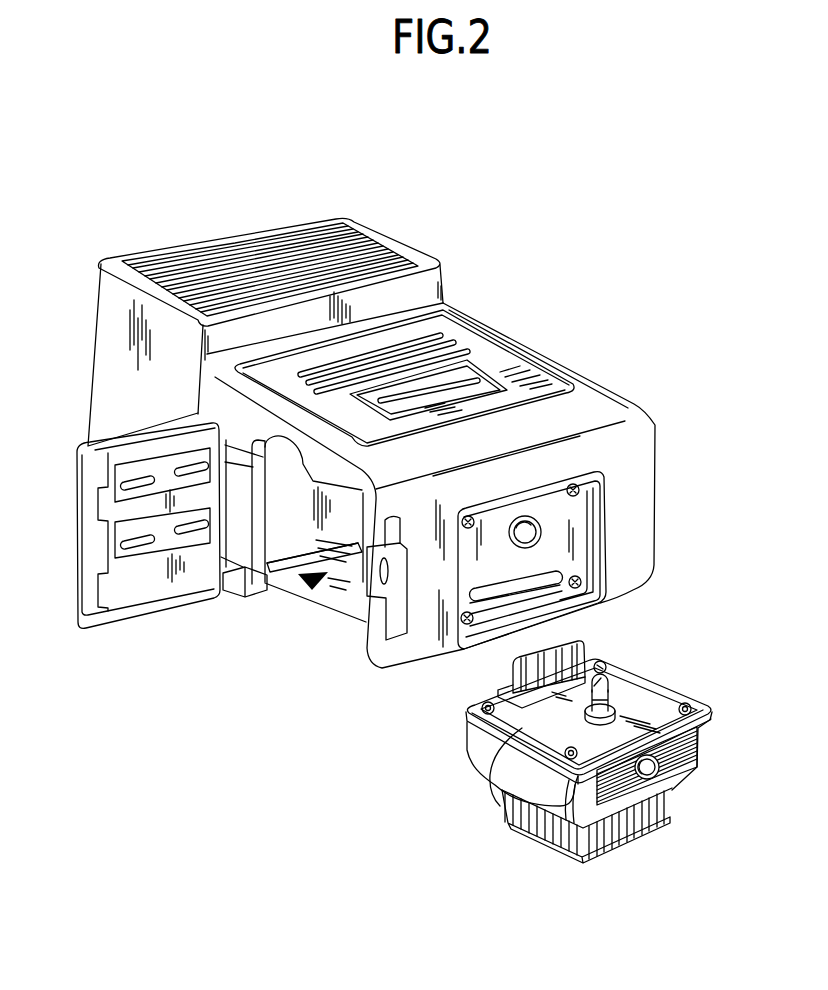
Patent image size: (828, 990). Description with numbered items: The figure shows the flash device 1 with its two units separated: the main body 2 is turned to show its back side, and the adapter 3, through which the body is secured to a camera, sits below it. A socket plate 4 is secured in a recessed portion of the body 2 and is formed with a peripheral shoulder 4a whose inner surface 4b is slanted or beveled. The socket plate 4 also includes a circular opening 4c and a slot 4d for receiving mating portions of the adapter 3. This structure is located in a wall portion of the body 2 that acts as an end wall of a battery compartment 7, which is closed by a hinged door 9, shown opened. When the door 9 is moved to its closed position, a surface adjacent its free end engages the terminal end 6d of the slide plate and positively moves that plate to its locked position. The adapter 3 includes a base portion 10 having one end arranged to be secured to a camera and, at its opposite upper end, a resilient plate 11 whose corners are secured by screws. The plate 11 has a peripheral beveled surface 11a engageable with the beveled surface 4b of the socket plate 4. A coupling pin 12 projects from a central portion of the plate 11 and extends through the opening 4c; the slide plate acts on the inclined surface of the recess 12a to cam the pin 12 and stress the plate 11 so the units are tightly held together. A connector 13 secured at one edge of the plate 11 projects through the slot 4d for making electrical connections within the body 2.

The flash device 1 is at (372, 213).
The main body 2 is at (500, 341).
The adapter 3 is at (478, 733).
The socket plate 4 is at (570, 503).
The peripheral shoulder 4a is at (596, 537).
The inner surface 4b is at (582, 580).
The circular opening 4c is at (541, 519).
The slot 4d is at (488, 615).
The terminal end 6d is at (360, 585).
The battery compartment 7 is at (303, 568).
The hinged door 9 is at (122, 582).
The base portion 10 is at (628, 838).
The resilient plate 11 is at (522, 727).
The peripheral beveled surface 11a is at (530, 727).
The coupling pin 12 is at (613, 695).
The recess 12a is at (610, 683).
The connector 13 is at (580, 650).